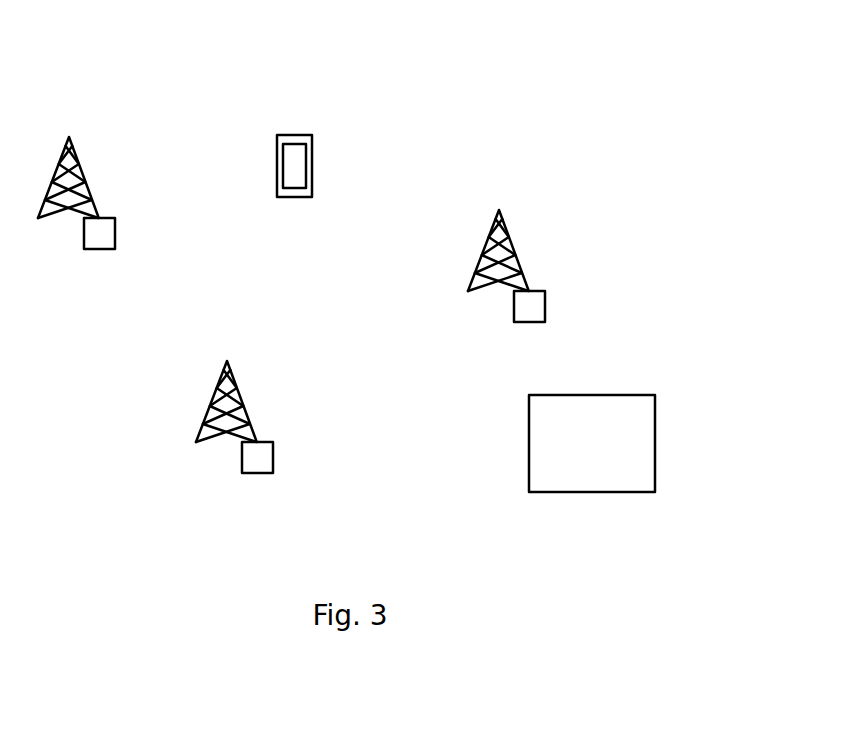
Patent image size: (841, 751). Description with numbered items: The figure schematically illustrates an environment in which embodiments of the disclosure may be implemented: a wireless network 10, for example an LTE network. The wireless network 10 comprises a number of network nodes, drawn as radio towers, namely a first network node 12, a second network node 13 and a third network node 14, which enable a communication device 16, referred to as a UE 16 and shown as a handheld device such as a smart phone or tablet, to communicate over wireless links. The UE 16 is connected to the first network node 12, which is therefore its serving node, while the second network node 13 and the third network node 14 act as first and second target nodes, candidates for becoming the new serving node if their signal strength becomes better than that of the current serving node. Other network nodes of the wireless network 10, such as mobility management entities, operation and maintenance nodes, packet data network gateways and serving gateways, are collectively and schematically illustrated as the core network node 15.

The wireless network 10 is at (437, 86).
The first network node 12 is at (108, 234).
The second network node 13 is at (538, 307).
The third network node 14 is at (266, 457).
The core network node 15 is at (655, 441).
The communication device 16 is at (312, 158).